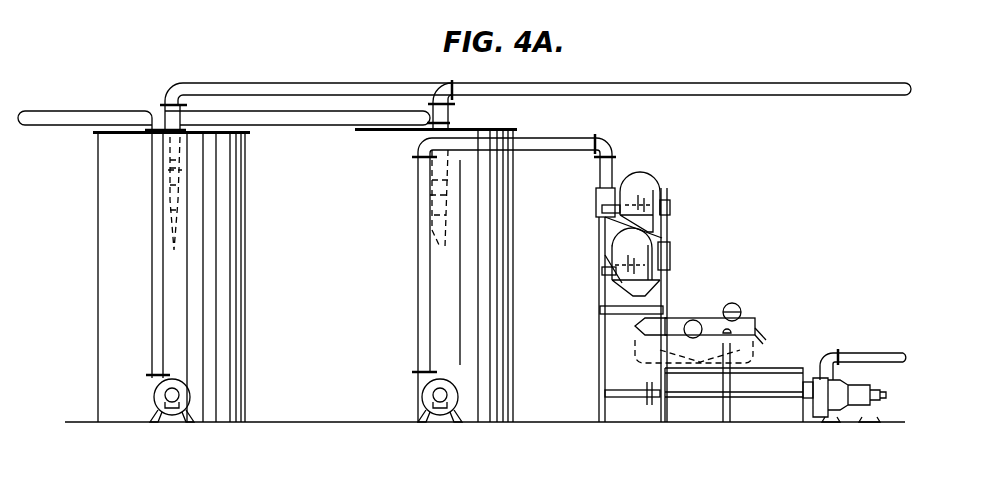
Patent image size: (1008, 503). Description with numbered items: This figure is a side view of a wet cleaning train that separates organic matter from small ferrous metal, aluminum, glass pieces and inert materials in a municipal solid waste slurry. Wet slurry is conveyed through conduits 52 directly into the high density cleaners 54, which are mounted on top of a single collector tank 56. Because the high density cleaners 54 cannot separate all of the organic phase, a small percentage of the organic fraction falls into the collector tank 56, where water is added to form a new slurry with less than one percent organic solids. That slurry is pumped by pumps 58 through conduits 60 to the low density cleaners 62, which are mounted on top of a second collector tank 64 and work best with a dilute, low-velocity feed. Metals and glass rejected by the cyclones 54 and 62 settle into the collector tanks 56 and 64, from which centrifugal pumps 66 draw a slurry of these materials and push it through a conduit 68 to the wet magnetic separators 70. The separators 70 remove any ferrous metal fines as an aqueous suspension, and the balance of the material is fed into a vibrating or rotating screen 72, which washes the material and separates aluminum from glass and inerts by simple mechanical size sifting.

The conduit 52 is at (52, 118).
The high density cleaner 54 is at (180, 168).
The collector tank 56 is at (207, 276).
The pump 58 is at (185, 398).
The conduit 60 is at (158, 265).
The low density cleaner 62 is at (432, 191).
The collector tank 64 is at (468, 276).
The centrifugal pump 66 is at (447, 395).
The conduit 68 is at (552, 140).
The wet magnetic separator 70 is at (647, 190).
The vibrating or rotating screen 72 is at (743, 323).